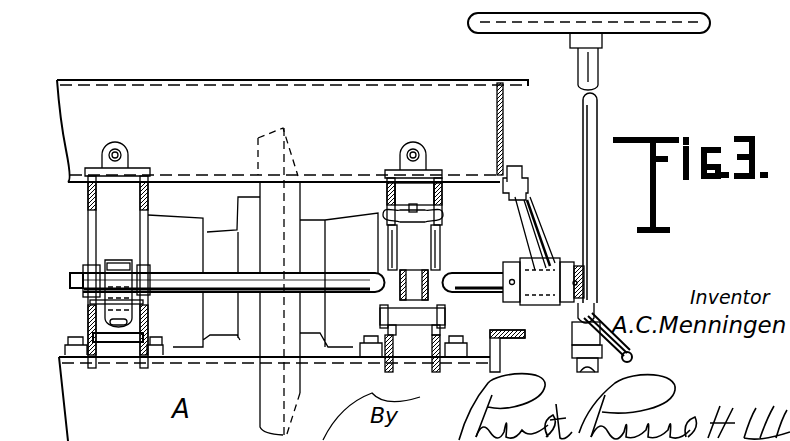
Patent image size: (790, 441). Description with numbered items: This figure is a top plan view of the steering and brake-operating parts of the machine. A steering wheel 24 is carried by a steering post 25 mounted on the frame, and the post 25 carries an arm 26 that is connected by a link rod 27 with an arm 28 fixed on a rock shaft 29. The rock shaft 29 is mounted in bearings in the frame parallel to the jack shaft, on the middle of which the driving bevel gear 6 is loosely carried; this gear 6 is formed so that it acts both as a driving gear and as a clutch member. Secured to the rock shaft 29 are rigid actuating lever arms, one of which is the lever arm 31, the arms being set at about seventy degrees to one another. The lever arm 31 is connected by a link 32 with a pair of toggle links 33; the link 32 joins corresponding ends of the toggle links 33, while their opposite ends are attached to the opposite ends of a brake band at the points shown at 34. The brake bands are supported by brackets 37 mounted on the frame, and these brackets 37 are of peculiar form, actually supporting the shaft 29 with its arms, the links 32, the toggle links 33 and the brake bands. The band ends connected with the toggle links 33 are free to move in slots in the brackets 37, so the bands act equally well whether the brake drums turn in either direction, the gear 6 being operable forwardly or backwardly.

The driving bevel gear 6 is at (278, 158).
The steering wheel 24 is at (633, 28).
The steering post 25 is at (598, 130).
The arm 26 is at (586, 376).
The link rod 27 is at (572, 346).
The arm 28 is at (597, 298).
The rock shaft 29 is at (346, 276).
The actuating lever arm 31 is at (117, 285).
The link 32 is at (100, 335).
The toggle links 33 is at (545, 245).
The attachment point 34 is at (533, 187).
The brackets 37 is at (90, 228).